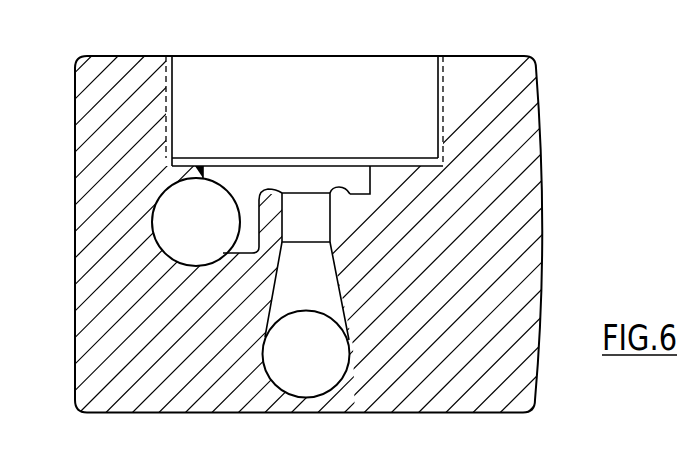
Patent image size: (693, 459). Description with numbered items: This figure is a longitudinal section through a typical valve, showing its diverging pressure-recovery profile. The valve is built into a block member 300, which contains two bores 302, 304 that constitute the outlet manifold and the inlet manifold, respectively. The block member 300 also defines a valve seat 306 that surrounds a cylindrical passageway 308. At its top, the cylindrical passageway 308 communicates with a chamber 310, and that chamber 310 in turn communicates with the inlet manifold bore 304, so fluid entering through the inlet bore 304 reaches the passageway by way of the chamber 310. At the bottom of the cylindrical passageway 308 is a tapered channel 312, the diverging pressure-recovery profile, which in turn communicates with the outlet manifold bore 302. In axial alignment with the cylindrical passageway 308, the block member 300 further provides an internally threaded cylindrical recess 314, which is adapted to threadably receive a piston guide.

The block member 300 is at (543, 266).
The bore 302 is at (306, 354).
The bore 304 is at (163, 231).
The valve seat 306 is at (274, 192).
The cylindrical passageway 308 is at (309, 215).
The chamber 310 is at (247, 177).
The tapered channel 312 is at (323, 288).
The internally threaded cylindrical recess 314 is at (407, 96).